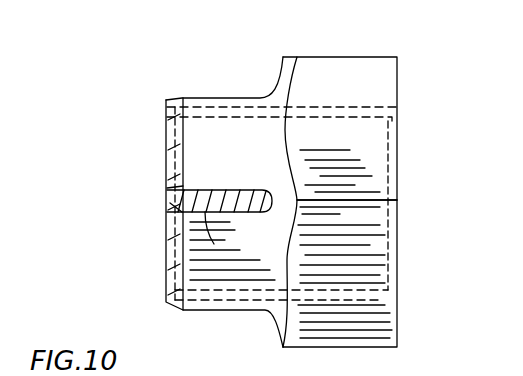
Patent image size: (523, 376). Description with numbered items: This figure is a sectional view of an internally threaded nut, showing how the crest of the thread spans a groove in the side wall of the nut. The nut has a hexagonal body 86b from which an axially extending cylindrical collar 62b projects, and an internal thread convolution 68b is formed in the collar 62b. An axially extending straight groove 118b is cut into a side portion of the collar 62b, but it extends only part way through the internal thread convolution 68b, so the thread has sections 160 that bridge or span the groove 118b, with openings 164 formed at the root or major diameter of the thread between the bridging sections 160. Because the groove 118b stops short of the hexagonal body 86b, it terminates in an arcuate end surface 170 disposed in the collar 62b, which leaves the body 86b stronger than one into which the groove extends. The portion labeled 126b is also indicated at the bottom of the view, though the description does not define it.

The cylindrical collar 62b is at (233, 99).
The hexagonal body 86b is at (358, 58).
The internal thread convolution 68b is at (218, 190).
The groove 118b is at (183, 184).
The openings 164 is at (180, 214).
The sections 160 is at (213, 249).
The arcuate end surface 170 is at (288, 218).
The base portion 126b is at (288, 374).